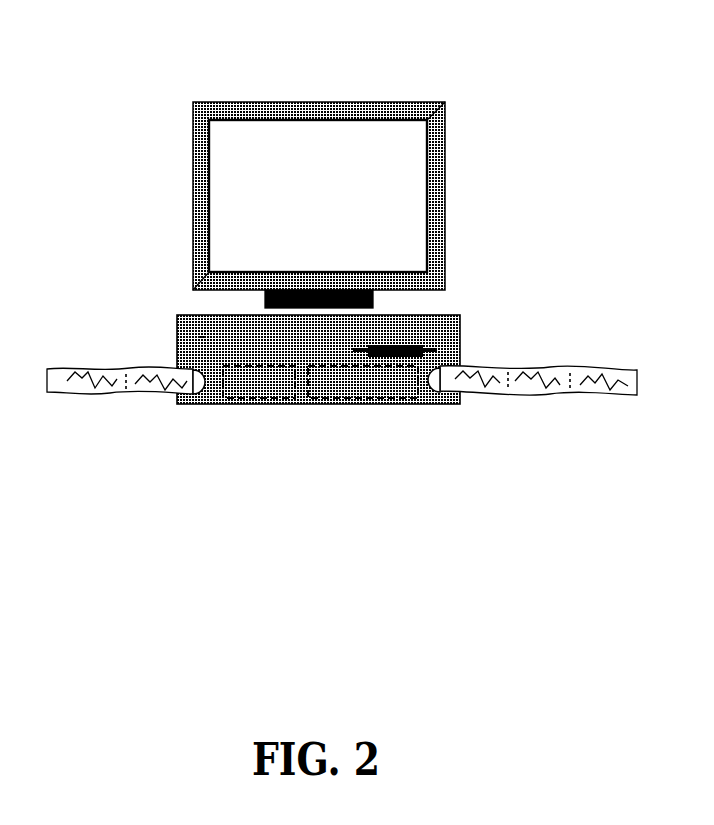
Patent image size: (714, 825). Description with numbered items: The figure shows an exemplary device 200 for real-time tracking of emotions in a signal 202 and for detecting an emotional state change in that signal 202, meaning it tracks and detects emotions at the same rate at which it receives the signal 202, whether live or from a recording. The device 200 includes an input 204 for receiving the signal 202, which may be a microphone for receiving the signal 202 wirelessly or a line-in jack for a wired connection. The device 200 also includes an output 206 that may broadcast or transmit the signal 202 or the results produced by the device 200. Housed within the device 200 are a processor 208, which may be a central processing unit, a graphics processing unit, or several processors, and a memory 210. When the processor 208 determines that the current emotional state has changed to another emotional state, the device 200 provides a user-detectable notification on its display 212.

The device 200 is at (213, 72).
The signal 202 is at (98, 368).
The input 204 is at (195, 400).
The output 206 is at (443, 400).
The processor 208 is at (245, 399).
The memory 210 is at (352, 400).
The display 212 is at (445, 210).